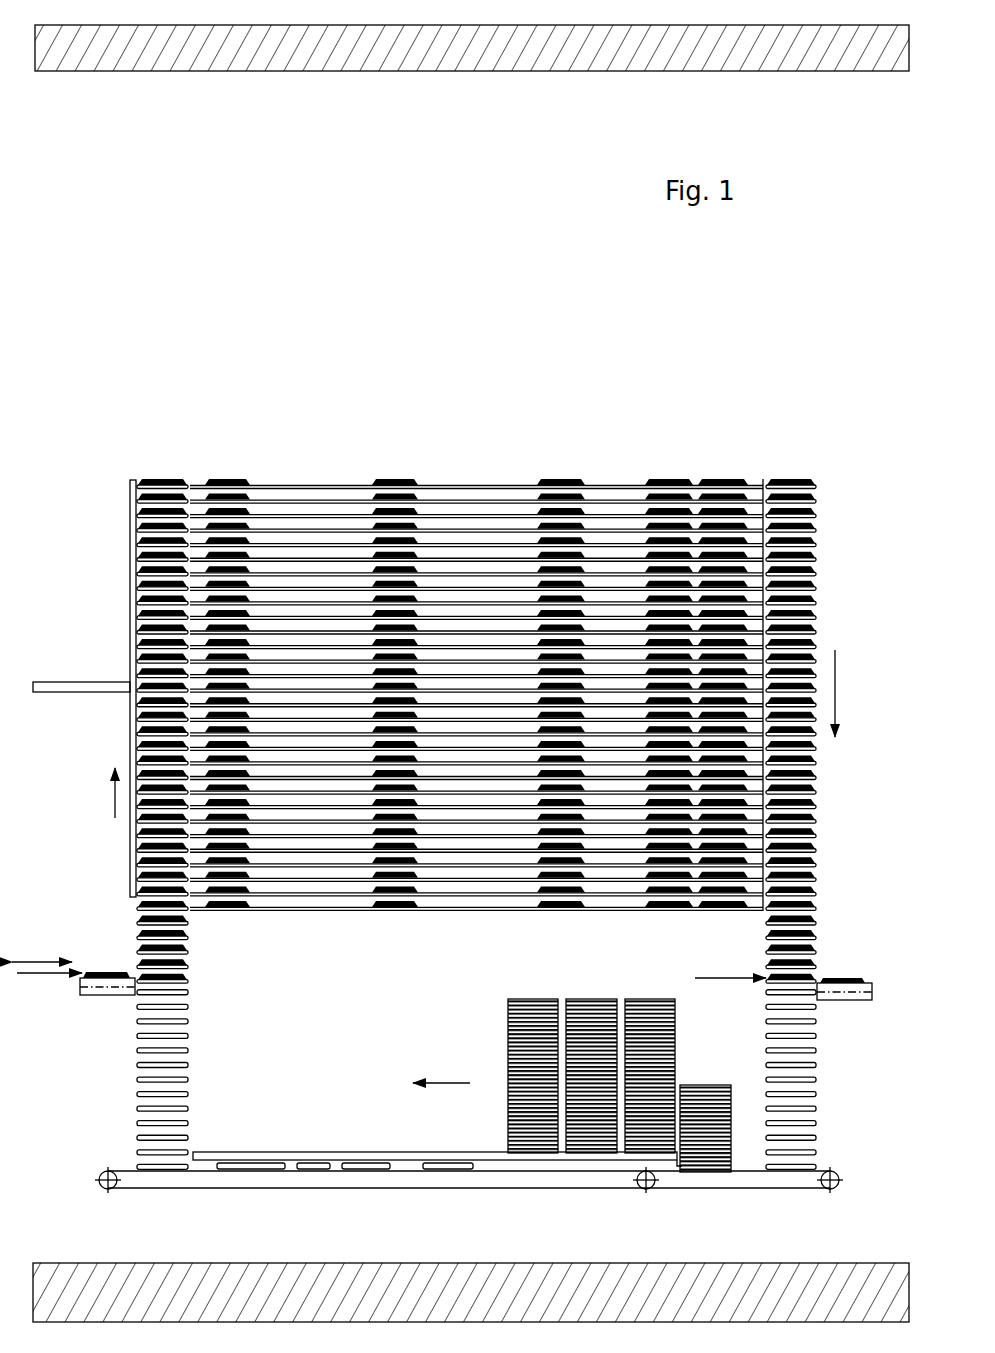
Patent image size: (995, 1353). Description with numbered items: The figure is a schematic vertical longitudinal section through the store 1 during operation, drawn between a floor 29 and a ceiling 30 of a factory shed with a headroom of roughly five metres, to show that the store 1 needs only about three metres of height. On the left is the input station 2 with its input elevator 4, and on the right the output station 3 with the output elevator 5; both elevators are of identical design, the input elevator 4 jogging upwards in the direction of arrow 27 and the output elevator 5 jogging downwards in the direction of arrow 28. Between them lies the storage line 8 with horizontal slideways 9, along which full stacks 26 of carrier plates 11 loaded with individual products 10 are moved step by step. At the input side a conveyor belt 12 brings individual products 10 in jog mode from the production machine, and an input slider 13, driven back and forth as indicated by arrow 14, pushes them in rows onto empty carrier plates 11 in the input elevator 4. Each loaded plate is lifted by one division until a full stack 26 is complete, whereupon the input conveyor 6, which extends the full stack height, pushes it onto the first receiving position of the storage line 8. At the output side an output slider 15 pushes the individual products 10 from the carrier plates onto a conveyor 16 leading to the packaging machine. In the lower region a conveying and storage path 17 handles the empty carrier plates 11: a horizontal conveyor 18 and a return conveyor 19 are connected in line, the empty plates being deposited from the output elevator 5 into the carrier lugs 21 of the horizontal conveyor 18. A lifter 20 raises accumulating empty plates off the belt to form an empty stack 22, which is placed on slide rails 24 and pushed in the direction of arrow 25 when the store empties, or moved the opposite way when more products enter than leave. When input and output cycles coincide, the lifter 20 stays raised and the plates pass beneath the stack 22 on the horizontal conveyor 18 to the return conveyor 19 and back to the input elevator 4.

The store 1 is at (790, 414).
The input station 2 is at (71, 959).
The output station 3 is at (785, 981).
The input elevator 4 is at (147, 452).
The output elevator 5 is at (778, 454).
The input conveyor 6 is at (74, 688).
The storage line 8 is at (760, 395).
The horizontal slideways 9 is at (307, 517).
The individual products 10 is at (398, 525).
The carrier plates 11 is at (536, 522).
The conveyor belt 12 is at (108, 990).
The input slider 13 is at (46, 977).
The arrow 14 is at (34, 948).
The output slider 15 is at (722, 978).
The conveyor 16 is at (843, 1000).
The conveying and storage path 17 is at (469, 1205).
The horizontal conveyor 18 is at (755, 1190).
The return conveyor 19 is at (370, 1188).
The lifter 20 is at (703, 1085).
The carrier lugs 21 is at (785, 1190).
The empty stack 22 is at (708, 1100).
The slide rails 24 is at (483, 1160).
The arrow 25 is at (445, 1083).
The full stack 26 is at (230, 570).
The arrow 27 is at (115, 797).
The arrow 28 is at (859, 682).
The floor 29 is at (245, 1282).
The ceiling 30 is at (468, 55).